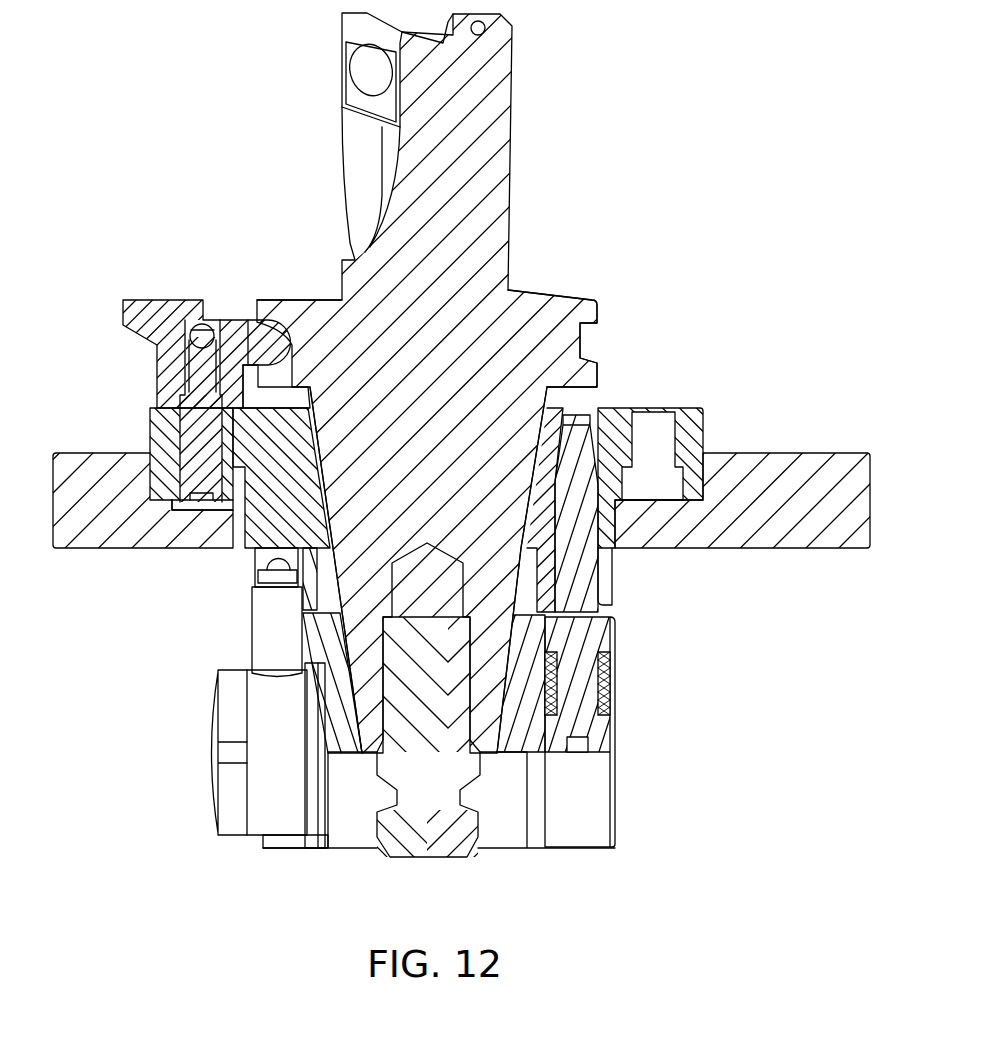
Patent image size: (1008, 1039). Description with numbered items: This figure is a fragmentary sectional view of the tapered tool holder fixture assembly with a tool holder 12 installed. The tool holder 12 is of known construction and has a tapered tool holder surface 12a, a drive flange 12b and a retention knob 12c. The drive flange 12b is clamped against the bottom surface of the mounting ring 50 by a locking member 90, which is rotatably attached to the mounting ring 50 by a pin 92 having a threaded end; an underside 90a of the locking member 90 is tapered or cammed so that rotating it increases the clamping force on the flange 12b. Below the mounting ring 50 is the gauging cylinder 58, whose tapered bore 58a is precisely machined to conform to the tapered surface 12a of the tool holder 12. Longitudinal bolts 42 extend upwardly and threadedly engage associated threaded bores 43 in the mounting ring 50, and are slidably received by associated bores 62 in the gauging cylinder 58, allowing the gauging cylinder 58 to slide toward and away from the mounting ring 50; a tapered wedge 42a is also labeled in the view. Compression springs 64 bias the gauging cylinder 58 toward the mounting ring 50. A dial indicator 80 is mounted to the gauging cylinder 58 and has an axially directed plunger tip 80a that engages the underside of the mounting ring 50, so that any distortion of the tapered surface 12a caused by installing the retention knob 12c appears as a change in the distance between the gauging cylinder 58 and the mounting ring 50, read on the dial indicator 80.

The tool holder 12 is at (566, 89).
The tapered tool holder surface 12a is at (505, 720).
The drive flange 12b is at (570, 298).
The retention knob 12c is at (430, 835).
The longitudinal bolts 42 is at (580, 718).
The tapered wedge 42a is at (580, 422).
The threaded bores 43 is at (585, 440).
The mounting ring 50 is at (703, 425).
The gauging cylinder 58 is at (637, 638).
The tapered bore 58a is at (355, 680).
The bores 62 is at (585, 590).
The compression springs 64 is at (608, 672).
The dial indicator 80 is at (222, 859).
The plunger tip 80a is at (275, 558).
The locking member 90 is at (160, 296).
The underside 90a is at (266, 298).
The pin 92 is at (197, 430).